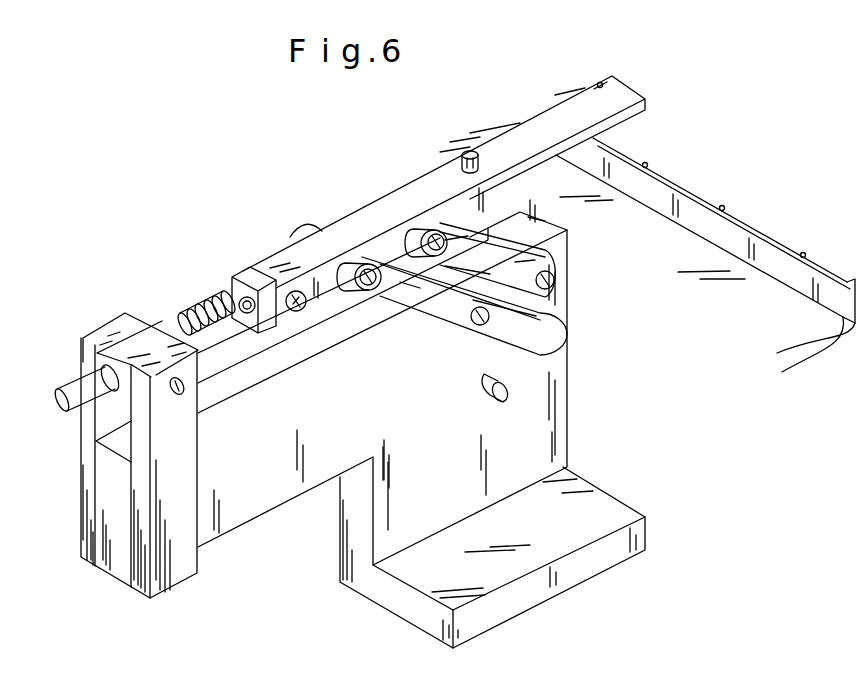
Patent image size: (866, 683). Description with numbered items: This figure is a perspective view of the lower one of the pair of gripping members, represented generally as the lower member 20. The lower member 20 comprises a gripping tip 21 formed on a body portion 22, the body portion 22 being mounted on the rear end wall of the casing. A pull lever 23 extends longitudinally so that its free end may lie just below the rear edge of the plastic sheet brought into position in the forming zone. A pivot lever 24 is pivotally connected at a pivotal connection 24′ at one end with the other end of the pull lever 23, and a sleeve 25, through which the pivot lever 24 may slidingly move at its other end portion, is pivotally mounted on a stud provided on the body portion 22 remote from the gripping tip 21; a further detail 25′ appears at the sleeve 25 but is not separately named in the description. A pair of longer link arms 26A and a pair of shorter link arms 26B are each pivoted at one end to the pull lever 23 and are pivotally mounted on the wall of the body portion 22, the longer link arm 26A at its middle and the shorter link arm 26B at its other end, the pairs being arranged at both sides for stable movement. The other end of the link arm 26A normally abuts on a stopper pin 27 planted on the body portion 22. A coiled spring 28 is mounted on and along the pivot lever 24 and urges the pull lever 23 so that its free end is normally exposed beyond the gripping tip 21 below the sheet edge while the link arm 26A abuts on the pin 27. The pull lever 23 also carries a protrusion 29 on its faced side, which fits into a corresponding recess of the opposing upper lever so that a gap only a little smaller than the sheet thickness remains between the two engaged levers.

The lower member 20 is at (584, 402).
The gripping tip 21 is at (745, 228).
The body portion 22 is at (85, 432).
The pull lever 23 is at (625, 117).
The pivot lever 24 is at (198, 326).
The pivotal connection 24′ is at (307, 310).
The sleeve 25 is at (125, 350).
The hole in end cap block 25′ is at (188, 390).
The longer link arm 26A is at (340, 252).
The shorter link arm 26B is at (428, 236).
The stopper pin 27 is at (484, 386).
The coiled spring 28 is at (230, 302).
The protrusion 29 is at (462, 157).